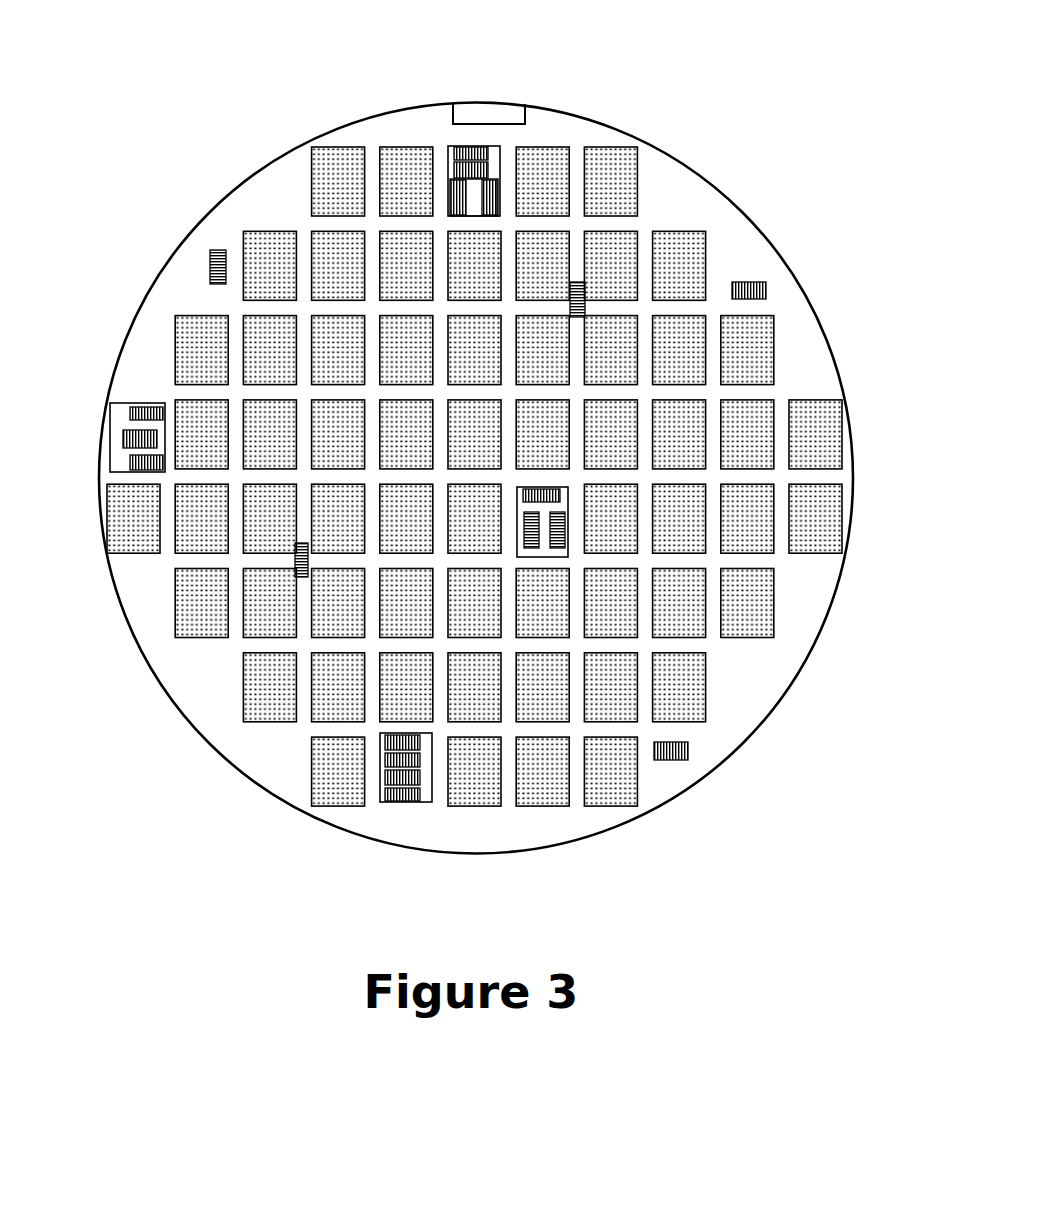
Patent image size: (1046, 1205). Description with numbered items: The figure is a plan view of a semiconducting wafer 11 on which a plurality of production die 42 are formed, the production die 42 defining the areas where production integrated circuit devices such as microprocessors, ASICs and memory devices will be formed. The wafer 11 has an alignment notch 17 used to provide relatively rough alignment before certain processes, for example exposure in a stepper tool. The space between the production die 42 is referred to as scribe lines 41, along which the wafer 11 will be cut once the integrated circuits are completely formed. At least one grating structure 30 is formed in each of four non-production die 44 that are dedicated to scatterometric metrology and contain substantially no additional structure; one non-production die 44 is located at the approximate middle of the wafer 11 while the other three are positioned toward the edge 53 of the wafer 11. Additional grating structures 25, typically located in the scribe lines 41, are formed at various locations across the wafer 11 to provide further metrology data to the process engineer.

The wafer 11 is at (278, 190).
The alignment notch 17 is at (485, 110).
The grating structures 25 is at (210, 253).
The grating structure 30 is at (492, 145).
The scribe lines 41 is at (642, 308).
The production die 42 is at (613, 170).
The non-production die 44 is at (483, 478).
The edge 53 is at (710, 185).